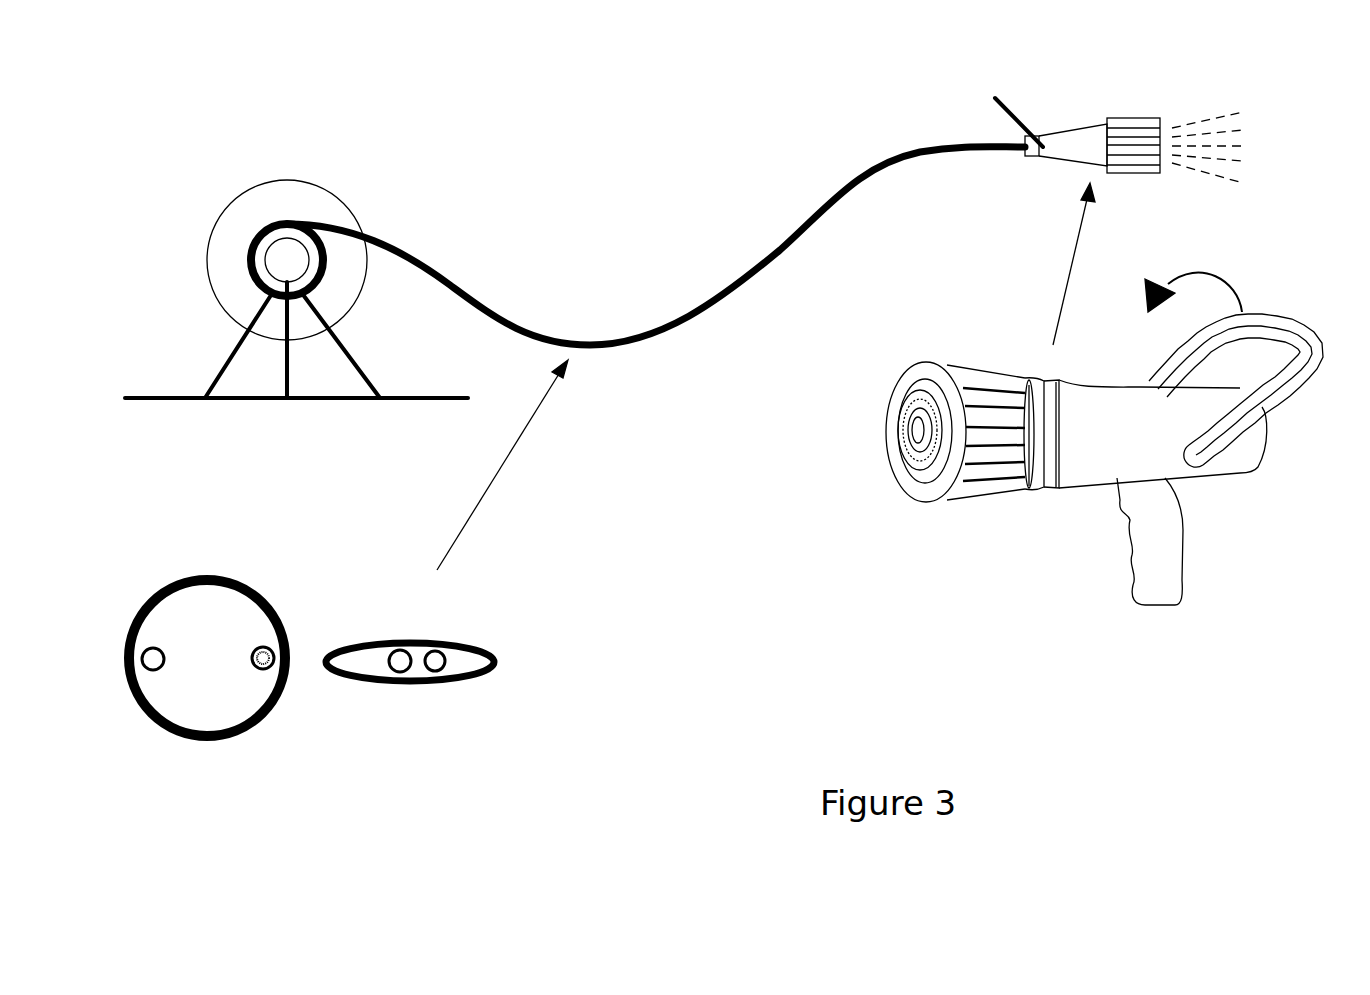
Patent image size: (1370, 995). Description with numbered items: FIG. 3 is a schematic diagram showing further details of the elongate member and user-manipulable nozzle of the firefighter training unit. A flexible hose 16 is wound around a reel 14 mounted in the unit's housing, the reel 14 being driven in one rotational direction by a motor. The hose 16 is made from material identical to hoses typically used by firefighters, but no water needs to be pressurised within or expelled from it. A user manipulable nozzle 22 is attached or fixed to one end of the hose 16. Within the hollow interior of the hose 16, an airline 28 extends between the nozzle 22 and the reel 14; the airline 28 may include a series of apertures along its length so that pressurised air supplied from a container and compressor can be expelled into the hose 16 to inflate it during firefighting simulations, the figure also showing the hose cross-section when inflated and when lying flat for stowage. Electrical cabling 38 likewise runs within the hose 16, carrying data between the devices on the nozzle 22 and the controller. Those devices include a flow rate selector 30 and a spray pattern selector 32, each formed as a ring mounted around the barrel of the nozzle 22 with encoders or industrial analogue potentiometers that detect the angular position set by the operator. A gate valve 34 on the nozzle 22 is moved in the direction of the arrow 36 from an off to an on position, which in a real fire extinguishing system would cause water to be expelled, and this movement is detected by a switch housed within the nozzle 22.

The reel 14 is at (270, 205).
The flexible hose 16 is at (480, 305).
The user manipulable nozzle 22 is at (1128, 140).
The airline 28 is at (162, 670).
The flow rate selector 30 is at (1054, 497).
The spray pattern selector 32 is at (1027, 497).
The gate valve 34 is at (1273, 332).
The arrow 36 is at (1193, 279).
The electrical cabling 38 is at (253, 650).